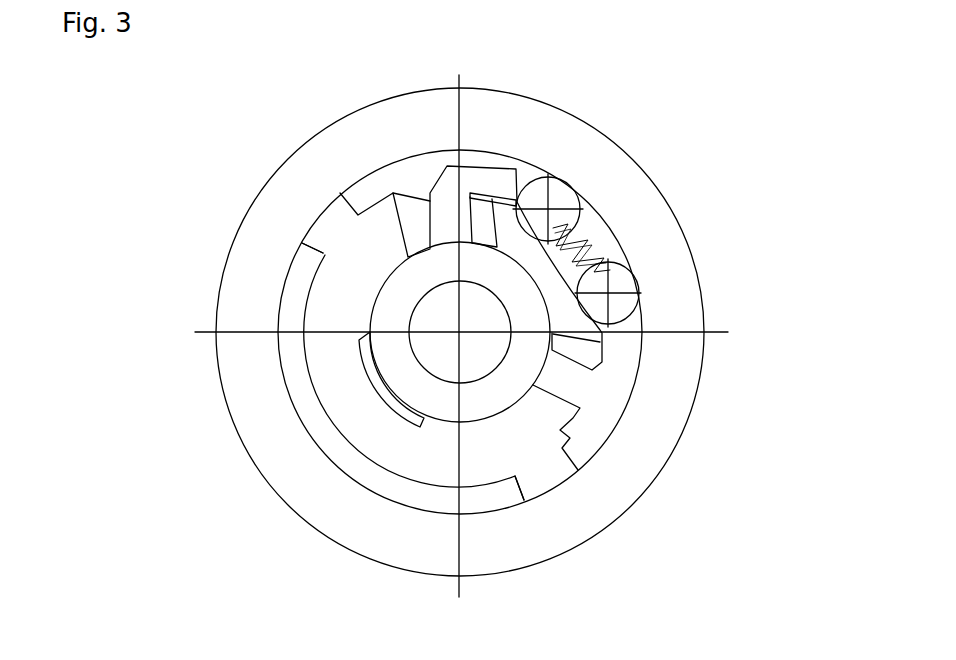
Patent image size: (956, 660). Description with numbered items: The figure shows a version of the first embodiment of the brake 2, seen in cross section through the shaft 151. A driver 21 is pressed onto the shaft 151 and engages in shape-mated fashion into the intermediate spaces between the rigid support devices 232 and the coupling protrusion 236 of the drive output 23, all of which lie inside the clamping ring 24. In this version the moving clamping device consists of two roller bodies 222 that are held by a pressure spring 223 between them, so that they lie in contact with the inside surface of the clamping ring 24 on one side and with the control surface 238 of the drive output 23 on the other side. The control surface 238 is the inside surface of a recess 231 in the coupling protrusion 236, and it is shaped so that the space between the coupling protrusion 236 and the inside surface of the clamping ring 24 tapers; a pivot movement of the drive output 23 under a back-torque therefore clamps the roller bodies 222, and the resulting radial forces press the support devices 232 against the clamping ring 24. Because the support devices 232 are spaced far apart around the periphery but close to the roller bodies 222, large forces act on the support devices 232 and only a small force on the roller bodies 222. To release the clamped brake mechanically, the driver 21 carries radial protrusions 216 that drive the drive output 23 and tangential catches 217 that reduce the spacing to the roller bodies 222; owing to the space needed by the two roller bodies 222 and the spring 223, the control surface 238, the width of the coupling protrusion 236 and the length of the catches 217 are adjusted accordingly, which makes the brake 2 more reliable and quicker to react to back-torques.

The brake 2 is at (170, 481).
The driver 21 is at (360, 303).
The drive output 23 is at (297, 369).
The clamping ring 24 is at (333, 145).
The shaft 151 is at (437, 355).
The radial protrusions 216 is at (442, 203).
The tangential catches 217 is at (476, 180).
The roller bodies 222 is at (538, 197).
The pressure spring 223 is at (592, 247).
The recess 231 is at (590, 240).
The support devices 232 is at (323, 227).
The coupling protrusion 236 is at (523, 242).
The control surface 238 is at (590, 283).